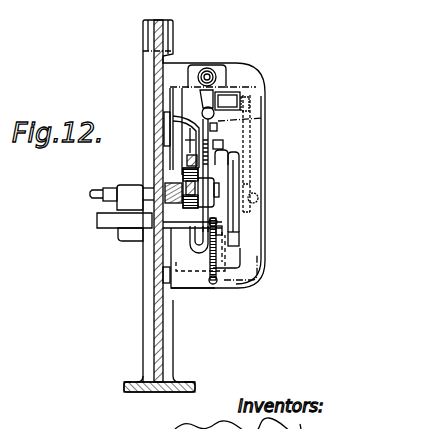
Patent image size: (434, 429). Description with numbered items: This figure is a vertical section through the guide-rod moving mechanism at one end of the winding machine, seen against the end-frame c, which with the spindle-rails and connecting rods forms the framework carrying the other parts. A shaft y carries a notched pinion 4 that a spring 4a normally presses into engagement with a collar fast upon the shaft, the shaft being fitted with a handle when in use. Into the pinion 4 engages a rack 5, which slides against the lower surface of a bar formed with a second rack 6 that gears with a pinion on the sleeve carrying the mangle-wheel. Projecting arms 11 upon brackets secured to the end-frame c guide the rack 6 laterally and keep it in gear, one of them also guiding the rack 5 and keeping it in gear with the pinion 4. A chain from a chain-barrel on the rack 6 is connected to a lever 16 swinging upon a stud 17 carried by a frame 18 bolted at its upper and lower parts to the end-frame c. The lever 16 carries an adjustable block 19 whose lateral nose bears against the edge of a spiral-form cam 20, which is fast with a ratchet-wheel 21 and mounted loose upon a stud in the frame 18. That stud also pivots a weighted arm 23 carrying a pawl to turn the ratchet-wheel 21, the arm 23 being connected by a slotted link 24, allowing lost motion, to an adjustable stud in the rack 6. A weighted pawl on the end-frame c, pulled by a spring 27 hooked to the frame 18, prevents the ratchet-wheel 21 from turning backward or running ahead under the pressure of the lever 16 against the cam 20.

The end-frame c is at (141, 362).
The shaft y is at (88, 195).
The pinion 4 is at (183, 170).
The spring 4a is at (168, 183).
The rack 5 is at (187, 157).
The rack 6 is at (195, 123).
The projecting arms 11 is at (186, 142).
The lever 16 is at (250, 109).
The stud 17 is at (262, 97).
The frame 18 is at (217, 130).
The block 19 is at (240, 158).
The cam 20 is at (240, 233).
The ratchet-wheel 21 is at (258, 199).
The arm 23 is at (252, 125).
The slotted link 24 is at (222, 148).
The spring 27 is at (216, 270).